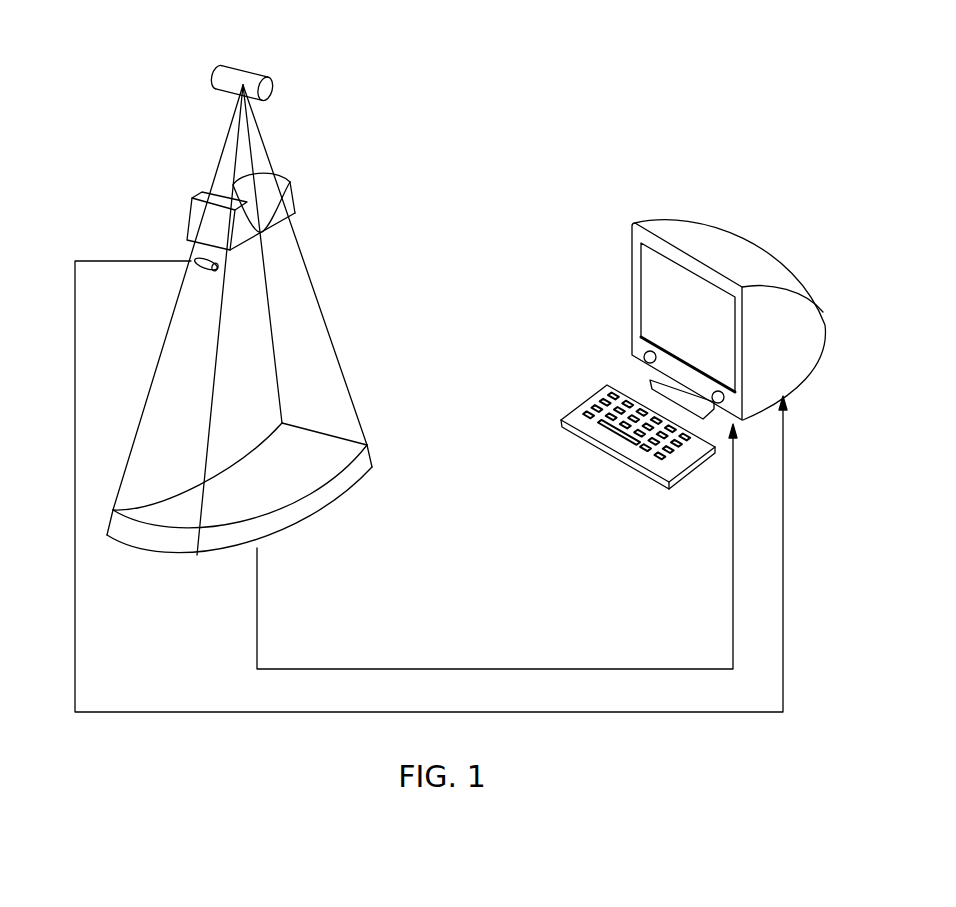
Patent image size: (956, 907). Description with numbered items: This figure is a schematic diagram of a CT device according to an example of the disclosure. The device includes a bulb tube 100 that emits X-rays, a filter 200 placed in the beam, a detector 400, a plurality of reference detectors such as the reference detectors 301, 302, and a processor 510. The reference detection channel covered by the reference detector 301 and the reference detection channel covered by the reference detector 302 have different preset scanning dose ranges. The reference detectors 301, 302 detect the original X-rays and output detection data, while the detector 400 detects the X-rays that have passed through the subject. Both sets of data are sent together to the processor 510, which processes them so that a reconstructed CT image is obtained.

The bulb tube 100 is at (258, 72).
The filter 200 is at (267, 200).
The reference detector 301 is at (193, 257).
The reference detector 302 is at (205, 268).
The detector 400 is at (267, 492).
The processor 510 is at (707, 233).